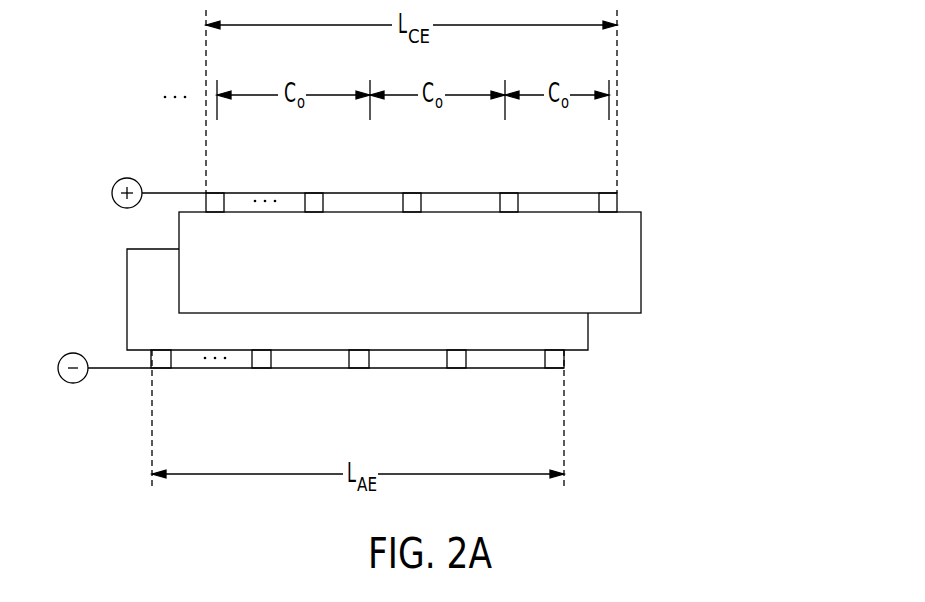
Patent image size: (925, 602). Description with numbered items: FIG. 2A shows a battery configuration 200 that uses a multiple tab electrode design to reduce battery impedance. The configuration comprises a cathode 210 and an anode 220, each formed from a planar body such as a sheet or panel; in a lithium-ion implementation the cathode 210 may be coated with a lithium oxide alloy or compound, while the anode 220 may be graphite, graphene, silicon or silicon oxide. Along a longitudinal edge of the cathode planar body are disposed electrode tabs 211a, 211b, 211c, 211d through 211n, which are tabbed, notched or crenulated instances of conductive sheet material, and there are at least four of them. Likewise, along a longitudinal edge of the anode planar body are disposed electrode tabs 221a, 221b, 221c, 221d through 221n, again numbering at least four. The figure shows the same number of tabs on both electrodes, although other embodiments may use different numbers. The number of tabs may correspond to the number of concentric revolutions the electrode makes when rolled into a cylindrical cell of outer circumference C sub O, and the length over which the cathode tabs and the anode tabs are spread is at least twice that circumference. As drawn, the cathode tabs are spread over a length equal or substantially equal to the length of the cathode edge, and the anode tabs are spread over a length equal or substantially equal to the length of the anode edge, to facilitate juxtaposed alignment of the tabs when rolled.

The battery configuration 200 is at (745, 260).
The cathode 210 is at (633, 255).
The anode 220 is at (582, 327).
The electrode tab 211a is at (603, 207).
The electrode tab 211b is at (514, 207).
The electrode tab 211c is at (416, 207).
The electrode tab 211d is at (319, 207).
The electrode tab 211n is at (220, 207).
The electrode tab 221a is at (557, 356).
The electrode tab 221b is at (456, 356).
The electrode tab 221c is at (359, 356).
The electrode tab 221d is at (261, 356).
The electrode tab 221n is at (161, 356).